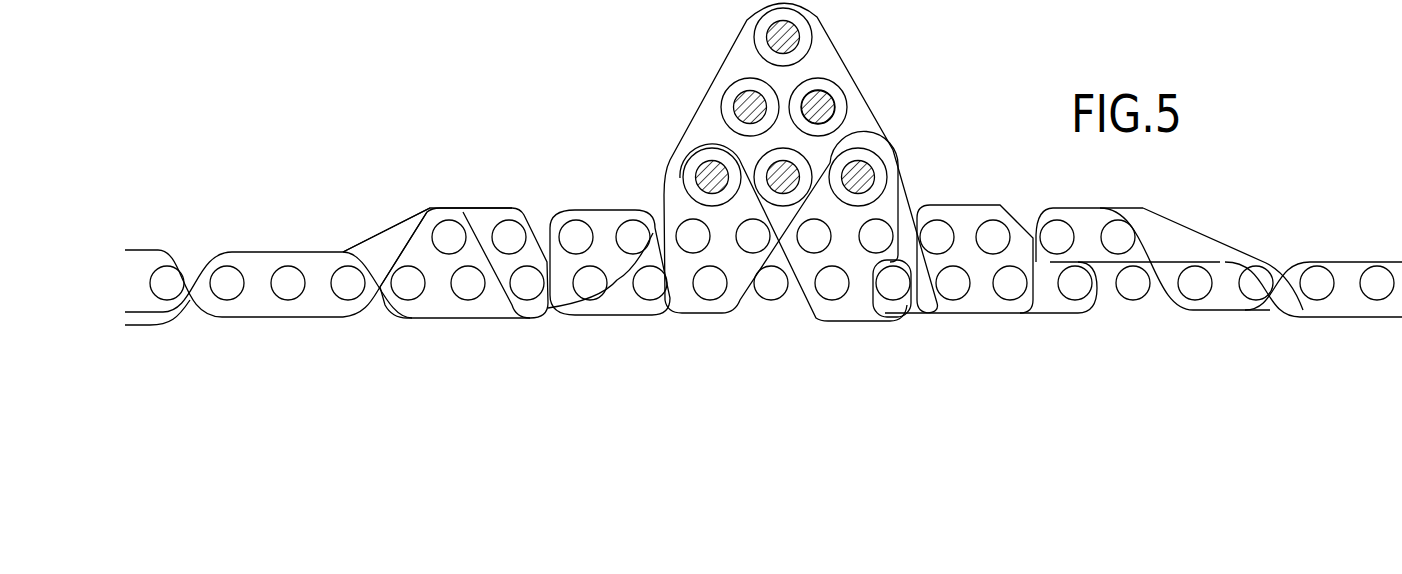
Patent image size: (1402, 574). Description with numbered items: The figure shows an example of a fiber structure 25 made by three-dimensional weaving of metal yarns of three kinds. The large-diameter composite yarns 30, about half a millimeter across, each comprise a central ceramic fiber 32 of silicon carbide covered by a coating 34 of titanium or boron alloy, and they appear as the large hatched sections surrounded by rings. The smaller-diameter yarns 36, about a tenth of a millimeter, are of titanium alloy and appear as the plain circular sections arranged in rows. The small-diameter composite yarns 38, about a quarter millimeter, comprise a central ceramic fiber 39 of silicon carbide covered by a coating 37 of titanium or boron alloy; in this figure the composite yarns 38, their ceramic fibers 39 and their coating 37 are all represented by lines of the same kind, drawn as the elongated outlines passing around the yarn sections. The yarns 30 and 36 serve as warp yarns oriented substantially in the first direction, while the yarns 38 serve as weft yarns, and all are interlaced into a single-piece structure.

The fiber structure 25 is at (588, 70).
The composite yarn 30 is at (750, 32).
The central ceramic fiber 32 is at (823, 108).
The coating 34 is at (830, 85).
The yarn 36 is at (511, 233).
The coating 37 is at (384, 232).
The composite yarn 38 is at (379, 162).
The central ceramic fiber 39 is at (403, 249).